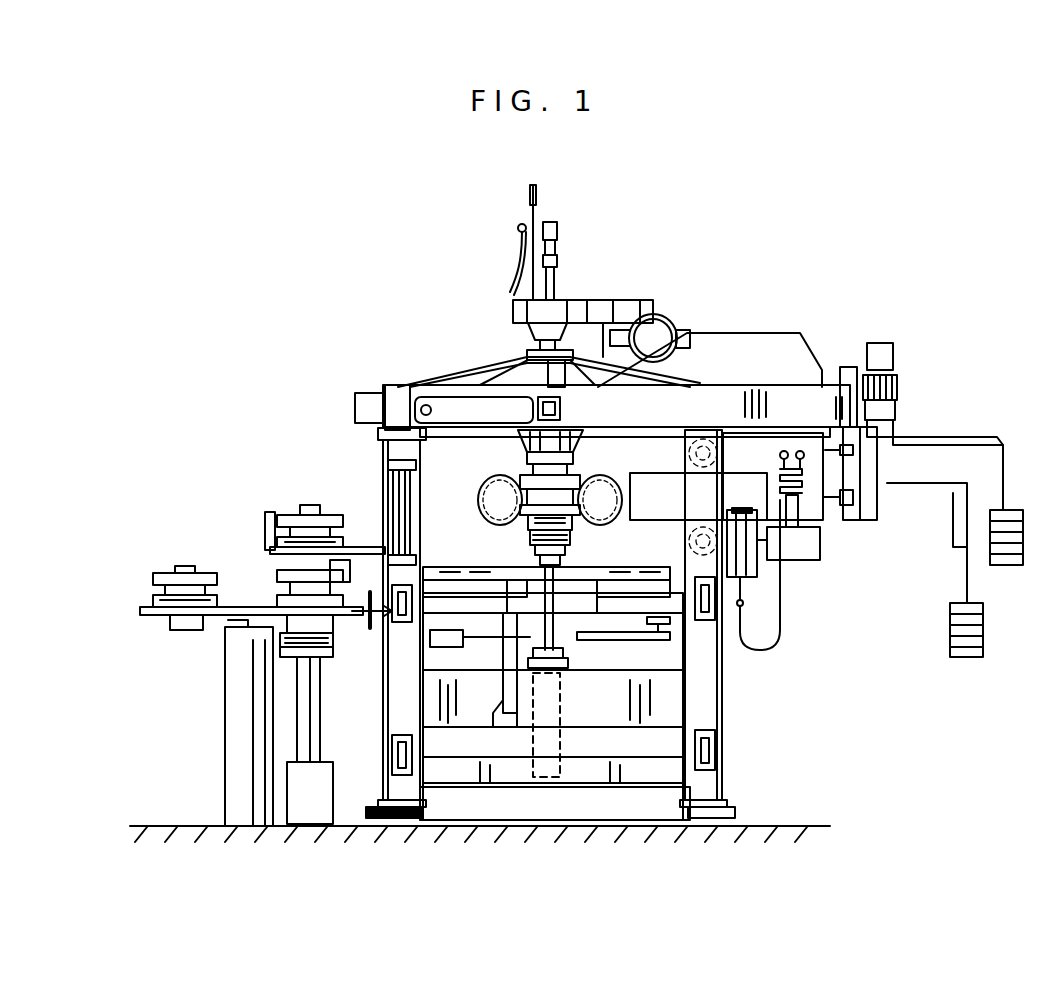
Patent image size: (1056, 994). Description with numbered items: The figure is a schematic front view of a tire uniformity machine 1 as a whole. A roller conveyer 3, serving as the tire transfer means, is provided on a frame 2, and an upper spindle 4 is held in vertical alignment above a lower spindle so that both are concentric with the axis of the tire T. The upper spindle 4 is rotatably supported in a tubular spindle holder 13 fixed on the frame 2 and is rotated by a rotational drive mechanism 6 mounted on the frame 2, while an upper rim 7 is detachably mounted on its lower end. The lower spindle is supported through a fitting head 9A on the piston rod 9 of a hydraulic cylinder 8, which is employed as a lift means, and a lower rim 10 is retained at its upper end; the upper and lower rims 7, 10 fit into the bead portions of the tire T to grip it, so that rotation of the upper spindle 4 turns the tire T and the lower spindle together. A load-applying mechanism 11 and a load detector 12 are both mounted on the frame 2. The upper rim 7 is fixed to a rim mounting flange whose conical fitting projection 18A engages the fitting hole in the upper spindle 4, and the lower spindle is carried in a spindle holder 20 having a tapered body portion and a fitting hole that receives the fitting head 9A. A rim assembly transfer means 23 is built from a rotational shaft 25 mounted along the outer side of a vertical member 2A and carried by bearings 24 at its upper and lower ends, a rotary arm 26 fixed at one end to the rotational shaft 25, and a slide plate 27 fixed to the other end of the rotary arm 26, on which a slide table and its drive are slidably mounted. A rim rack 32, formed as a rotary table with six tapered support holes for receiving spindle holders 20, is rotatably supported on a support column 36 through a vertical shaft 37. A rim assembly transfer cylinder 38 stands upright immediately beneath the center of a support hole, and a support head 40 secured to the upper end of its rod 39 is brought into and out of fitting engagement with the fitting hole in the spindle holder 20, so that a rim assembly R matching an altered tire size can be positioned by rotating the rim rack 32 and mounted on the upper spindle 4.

The tire uniformity machine 1 is at (465, 366).
The frame 2 is at (400, 395).
The vertical member 2A is at (390, 710).
The roller conveyer 3 is at (455, 572).
The upper spindle 4 is at (523, 462).
The rotational drive mechanism 6 is at (665, 318).
The upper rim 7 is at (575, 472).
The hydraulic cylinder 8 is at (555, 748).
The piston rod 9 is at (560, 640).
The fitting head 9A is at (552, 600).
The lower rim 10 is at (585, 524).
The load-applying mechanism 11 is at (662, 472).
The load detector 12 is at (703, 440).
The tubular spindle holder 13 is at (538, 422).
The conical fitting projection 18A is at (190, 572).
The spindle holder 20 is at (535, 543).
The rim assembly transfer means 23 is at (374, 522).
The bearings 24 is at (376, 428).
The rotational shaft 25 is at (397, 490).
The rotary arm 26 is at (272, 552).
The slide plate 27 is at (275, 548).
The rim rack 32 is at (225, 628).
The support column 36 is at (227, 793).
The vertical shaft 37 is at (238, 645).
The rim assembly transfer cylinder 38 is at (310, 745).
The rod 39 is at (272, 709).
The support head 40 is at (298, 672).
The rim R is at (508, 528).
The tire T is at (478, 490).